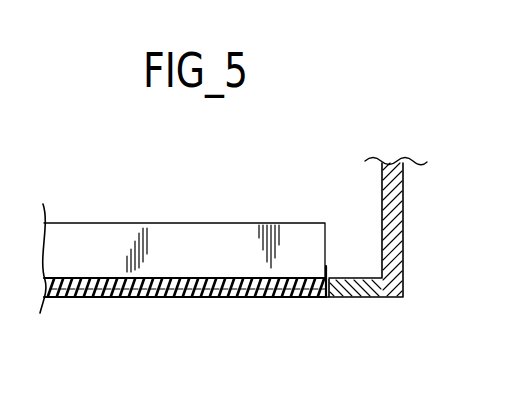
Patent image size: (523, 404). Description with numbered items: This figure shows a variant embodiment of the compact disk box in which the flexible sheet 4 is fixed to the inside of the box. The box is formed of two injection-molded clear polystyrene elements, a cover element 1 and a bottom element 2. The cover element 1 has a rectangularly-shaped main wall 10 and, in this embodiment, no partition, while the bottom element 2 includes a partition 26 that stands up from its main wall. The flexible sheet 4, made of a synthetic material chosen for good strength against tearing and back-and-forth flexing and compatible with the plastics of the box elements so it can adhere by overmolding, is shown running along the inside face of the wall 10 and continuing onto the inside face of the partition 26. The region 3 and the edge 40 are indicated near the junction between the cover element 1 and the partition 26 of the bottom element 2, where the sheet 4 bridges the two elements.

The cover element 1 is at (107, 217).
The main wall of the cover element 10 is at (195, 290).
The edge of plate 40 is at (327, 279).
The joint 3 is at (327, 300).
The bottom element 2 is at (416, 230).
The flexible sheet 4 is at (383, 191).
The partition 26 is at (366, 298).